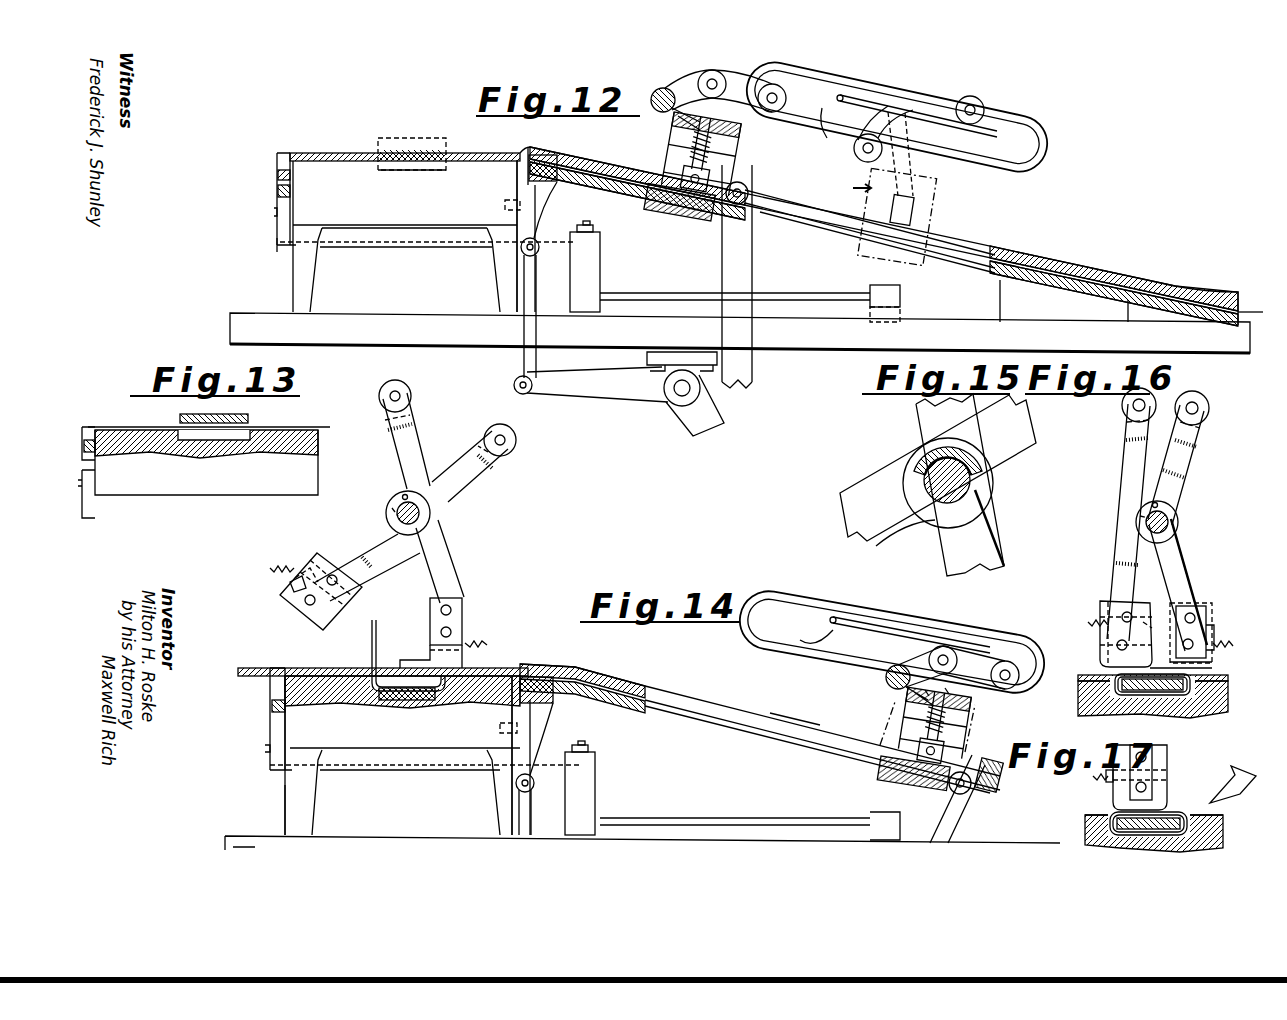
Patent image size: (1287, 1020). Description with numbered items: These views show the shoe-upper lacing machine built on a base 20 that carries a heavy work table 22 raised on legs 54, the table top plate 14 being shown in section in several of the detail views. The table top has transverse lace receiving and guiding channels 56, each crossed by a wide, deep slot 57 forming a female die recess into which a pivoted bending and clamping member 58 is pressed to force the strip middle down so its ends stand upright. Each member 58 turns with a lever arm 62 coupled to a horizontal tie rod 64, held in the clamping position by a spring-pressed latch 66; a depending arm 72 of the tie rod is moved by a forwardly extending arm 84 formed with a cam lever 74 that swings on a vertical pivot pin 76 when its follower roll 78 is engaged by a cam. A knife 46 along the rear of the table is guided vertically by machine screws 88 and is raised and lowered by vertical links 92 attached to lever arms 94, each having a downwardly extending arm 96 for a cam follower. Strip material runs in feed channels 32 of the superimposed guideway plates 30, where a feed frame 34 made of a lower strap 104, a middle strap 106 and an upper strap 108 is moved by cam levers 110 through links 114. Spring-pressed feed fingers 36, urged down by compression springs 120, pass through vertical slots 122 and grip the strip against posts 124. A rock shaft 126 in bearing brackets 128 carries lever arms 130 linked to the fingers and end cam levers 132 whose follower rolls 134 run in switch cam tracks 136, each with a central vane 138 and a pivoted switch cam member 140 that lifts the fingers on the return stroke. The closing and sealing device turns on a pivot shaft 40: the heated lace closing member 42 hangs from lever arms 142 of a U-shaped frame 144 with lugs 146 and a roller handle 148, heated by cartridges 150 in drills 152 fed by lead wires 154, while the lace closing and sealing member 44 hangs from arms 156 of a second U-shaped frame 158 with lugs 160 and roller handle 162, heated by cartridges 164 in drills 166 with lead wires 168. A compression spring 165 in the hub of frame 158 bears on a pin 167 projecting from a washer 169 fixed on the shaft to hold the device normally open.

In FIG. 12, the table top plate 14 is at (405, 157).
In FIG. 14, the table top plate 14 is at (258, 668).
In FIG. 16, the table top plate 14 is at (1085, 677).
In FIG. 17, the table top plate 14 is at (1096, 815).
In FIG. 12, the base 20 is at (252, 314).
In FIG. 14, the base 20 is at (258, 841).
In FIG. 12, the work table 22 is at (318, 170).
In FIG. 13, the work table 22 is at (241, 496).
In FIG. 14, the work table 22 is at (305, 683).
In FIG. 16, the work table 22 is at (1085, 708).
In FIG. 17, the work table 22 is at (1086, 828).
In FIG. 12, the plates 30 is at (578, 148).
In FIG. 14, the plates 30 is at (580, 670).
In FIG. 12, the feed channels 32 is at (602, 158).
In FIG. 14, the feed channels 32 is at (618, 684).
In FIG. 12, the frame 34 is at (672, 141).
In FIG. 14, the frame 34 is at (900, 714).
In FIG. 12, the feed fingers 36 is at (712, 120).
In FIG. 14, the feed fingers 36 is at (968, 708).
In FIG. 14, the pivot shaft 40 is at (425, 513).
In FIG. 15, the pivot shaft 40 is at (935, 475).
In FIG. 16, the pivot shaft 40 is at (1168, 523).
In FIG. 14, the lace closing member 42 is at (440, 654).
In FIG. 16, the lace closing member 42 is at (1206, 610).
In FIG. 17, the lace closing member 42 is at (1238, 768).
In FIG. 14, the lace closing and sealing member 44 is at (292, 600).
In FIG. 16, the lace closing and sealing member 44 is at (1160, 620).
In FIG. 17, the lace closing and sealing member 44 is at (1167, 762).
In FIG. 12, the knife 46 is at (522, 168).
In FIG. 14, the knife 46 is at (515, 702).
In FIG. 14, the legs 54 is at (292, 793).
In FIG. 14, the lace receiving and guiding channels 56 is at (362, 692).
In FIG. 16, the lace receiving and guiding channels 56 is at (1108, 698).
In FIG. 17, the lace receiving and guiding channels 56 is at (1220, 828).
In FIG. 12, the slot 57 is at (411, 170).
In FIG. 13, the slot 57 is at (216, 443).
In FIG. 14, the slot 57 is at (385, 700).
In FIG. 16, the slot 57 is at (1125, 700).
In FIG. 17, the slot 57 is at (1092, 843).
In FIG. 12, the bending and clamping member 58 is at (408, 142).
In FIG. 13, the bending and clamping member 58 is at (250, 419).
In FIG. 14, the bending and clamping member 58 is at (420, 700).
In FIG. 16, the bending and clamping member 58 is at (1175, 700).
In FIG. 17, the bending and clamping member 58 is at (1170, 816).
In FIG. 12, the lever arm 62 is at (288, 158).
In FIG. 13, the lever arm 62 is at (95, 428).
In FIG. 14, the lever arm 62 is at (272, 688).
In FIG. 12, the tie rod 64 is at (286, 190).
In FIG. 13, the tie rod 64 is at (100, 452).
In FIG. 14, the tie rod 64 is at (277, 709).
In FIG. 12, the latch 66 is at (280, 175).
In FIG. 12, the depending arm 72 is at (284, 226).
In FIG. 13, the depending arm 72 is at (95, 508).
In FIG. 14, the depending arm 72 is at (280, 749).
In FIG. 12, the cam lever 74 is at (660, 294).
In FIG. 14, the cam lever 74 is at (700, 818).
In FIG. 12, the pivot pin 76 is at (586, 226).
In FIG. 14, the pivot pin 76 is at (590, 752).
In FIG. 12, the follower roll 78 is at (897, 310).
In FIG. 12, the arm 84 is at (405, 247).
In FIG. 14, the arm 84 is at (400, 771).
In FIG. 12, the machine screws 88 is at (540, 205).
In FIG. 14, the machine screws 88 is at (532, 723).
In FIG. 12, the vertical links 92 is at (518, 363).
In FIG. 14, the vertical links 92 is at (529, 802).
In FIG. 12, the lever arms 94 is at (613, 389).
In FIG. 12, the arm 96 is at (692, 424).
In FIG. 12, the strap 104 is at (665, 206).
In FIG. 14, the strap 104 is at (888, 780).
In FIG. 12, the strap 106 is at (678, 165).
In FIG. 14, the strap 106 is at (903, 732).
In FIG. 12, the strap 108 is at (740, 140).
In FIG. 14, the strap 108 is at (903, 700).
In FIG. 12, the cam levers 110 is at (752, 270).
In FIG. 14, the cam levers 110 is at (958, 826).
In FIG. 12, the links 114 is at (740, 178).
In FIG. 14, the links 114 is at (958, 748).
In FIG. 12, the compression spring 120 is at (740, 158).
In FIG. 14, the compression spring 120 is at (970, 728).
In FIG. 12, the vertical slots 122 is at (808, 210).
In FIG. 14, the vertical slots 122 is at (732, 700).
In FIG. 12, the posts 124 is at (692, 214).
In FIG. 14, the posts 124 is at (940, 784).
In FIG. 12, the rock shaft 126 is at (650, 96).
In FIG. 14, the rock shaft 126 is at (885, 676).
In FIG. 12, the bearing brackets 128 is at (683, 120).
In FIG. 14, the bearing brackets 128 is at (900, 690).
In FIG. 12, the lever arms 130 is at (700, 80).
In FIG. 14, the lever arms 130 is at (930, 658).
In FIG. 12, the cam levers 132 is at (738, 80).
In FIG. 14, the cam levers 132 is at (1030, 652).
In FIG. 12, the follower rolls 134 is at (790, 100).
In FIG. 14, the follower rolls 134 is at (1020, 672).
In FIG. 12, the switch cam tracks 136 is at (1030, 118).
In FIG. 14, the switch cam tracks 136 is at (1018, 630).
In FIG. 12, the vane 138 is at (1030, 140).
In FIG. 14, the vane 138 is at (891, 645).
In FIG. 12, the switch cam member 140 is at (827, 132).
In FIG. 14, the switch cam member 140 is at (810, 640).
In FIG. 14, the lever arms 142 is at (446, 551).
In FIG. 15, the lever arms 142 is at (1004, 528).
In FIG. 16, the lever arms 142 is at (1190, 553).
In FIG. 14, the U-shaped frame 144 is at (418, 445).
In FIG. 15, the U-shaped frame 144 is at (920, 413).
In FIG. 16, the U-shaped frame 144 is at (1125, 469).
In FIG. 14, the lugs 146 is at (410, 415).
In FIG. 16, the lugs 146 is at (1124, 440).
In FIG. 14, the roller handle 148 is at (410, 400).
In FIG. 16, the roller handle 148 is at (1128, 410).
In FIG. 16, the cartridges 150 is at (1217, 626).
In FIG. 16, the drills 152 is at (1213, 665).
In FIG. 16, the lead wires 154 is at (1230, 643).
In FIG. 14, the arms 156 is at (376, 540).
In FIG. 15, the arms 156 is at (870, 516).
In FIG. 16, the arms 156 is at (1128, 562).
In FIG. 14, the U-shaped frame 158 is at (488, 488).
In FIG. 15, the U-shaped frame 158 is at (1016, 416).
In FIG. 16, the U-shaped frame 158 is at (1195, 468).
In FIG. 14, the lugs 160 is at (518, 463).
In FIG. 16, the lugs 160 is at (1202, 442).
In FIG. 14, the roller handle 162 is at (516, 441).
In FIG. 16, the roller handle 162 is at (1200, 402).
In FIG. 14, the cartridges 164 is at (325, 570).
In FIG. 16, the cartridges 164 is at (1106, 600).
In FIG. 15, the compression spring 165 is at (983, 458).
In FIG. 14, the drills 166 is at (290, 584).
In FIG. 16, the drills 166 is at (1150, 625).
In FIG. 14, the pin 167 is at (402, 495).
In FIG. 15, the pin 167 is at (925, 456).
In FIG. 16, the pin 167 is at (1152, 505).
In FIG. 14, the lead wires 168 is at (285, 572).
In FIG. 16, the lead wires 168 is at (1090, 622).
In FIG. 14, the washer 169 is at (394, 509).
In FIG. 16, the washer 169 is at (1142, 518).